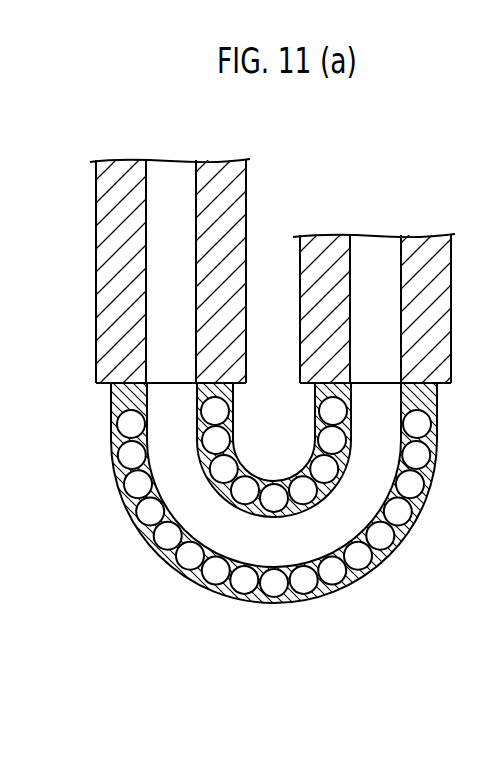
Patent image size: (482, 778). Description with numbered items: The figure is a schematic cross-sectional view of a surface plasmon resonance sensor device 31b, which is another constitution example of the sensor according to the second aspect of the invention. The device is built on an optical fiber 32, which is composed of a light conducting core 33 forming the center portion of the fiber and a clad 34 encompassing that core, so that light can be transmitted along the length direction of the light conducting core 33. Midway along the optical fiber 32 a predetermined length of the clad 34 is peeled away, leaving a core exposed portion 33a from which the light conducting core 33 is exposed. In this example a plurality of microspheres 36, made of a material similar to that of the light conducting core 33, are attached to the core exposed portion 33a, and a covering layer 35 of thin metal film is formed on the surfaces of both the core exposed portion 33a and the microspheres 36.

The surface plasmon resonance sensor device 31b is at (296, 387).
The optical fiber 32 is at (245, 249).
The light conducting core 33 is at (173, 175).
The core exposed portion 33a is at (365, 498).
The clad 34 is at (96, 211).
The covering layer 35 is at (236, 419).
The microspheres 36 is at (273, 497).